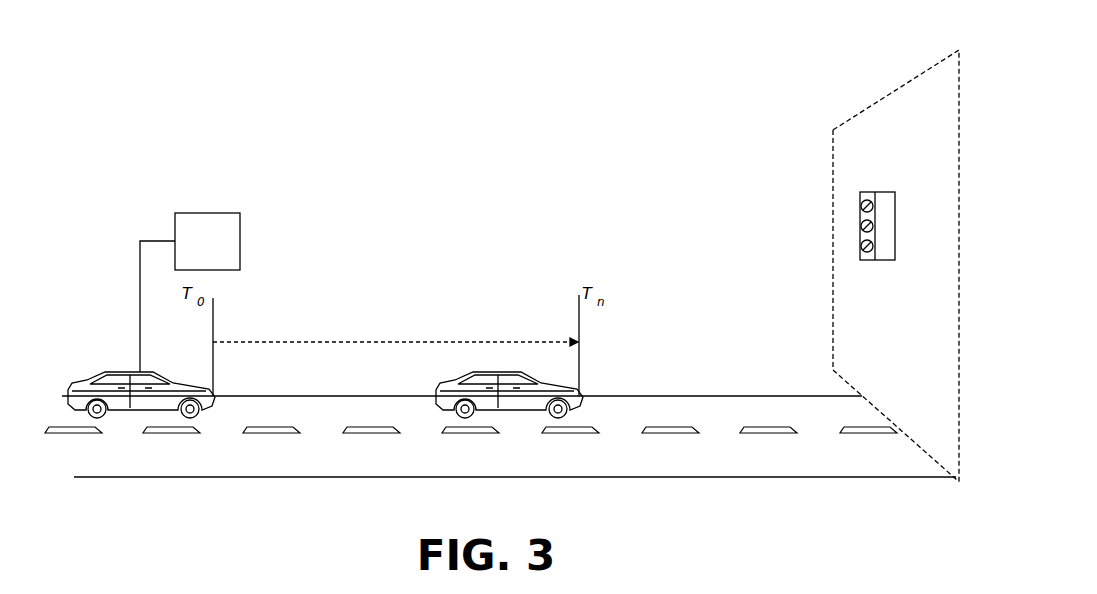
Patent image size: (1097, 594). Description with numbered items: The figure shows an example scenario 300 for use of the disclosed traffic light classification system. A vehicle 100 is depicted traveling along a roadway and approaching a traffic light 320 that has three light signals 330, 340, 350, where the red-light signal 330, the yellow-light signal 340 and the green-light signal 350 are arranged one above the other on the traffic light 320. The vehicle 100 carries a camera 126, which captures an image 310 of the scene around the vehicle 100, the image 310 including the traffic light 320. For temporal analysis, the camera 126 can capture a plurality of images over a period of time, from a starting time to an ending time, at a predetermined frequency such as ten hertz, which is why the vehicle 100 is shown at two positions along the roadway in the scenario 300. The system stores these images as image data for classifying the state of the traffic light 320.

The vehicle 100 is at (118, 370).
The camera 126 is at (194, 251).
The example scenario 300 is at (475, 510).
The image 310 is at (853, 118).
The traffic light 320 is at (878, 192).
The red-light signal 330 is at (860, 207).
The yellow-light signal 340 is at (860, 226).
The green-light signal 350 is at (860, 247).